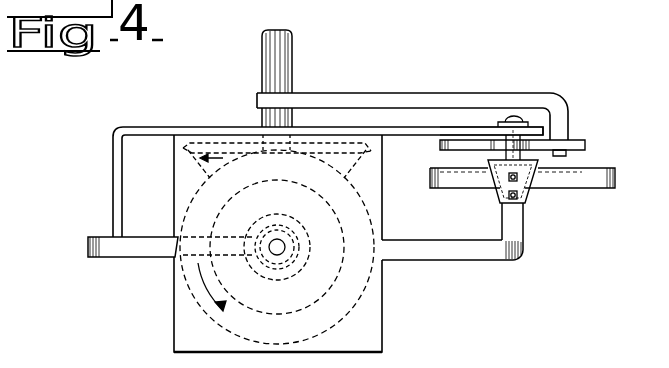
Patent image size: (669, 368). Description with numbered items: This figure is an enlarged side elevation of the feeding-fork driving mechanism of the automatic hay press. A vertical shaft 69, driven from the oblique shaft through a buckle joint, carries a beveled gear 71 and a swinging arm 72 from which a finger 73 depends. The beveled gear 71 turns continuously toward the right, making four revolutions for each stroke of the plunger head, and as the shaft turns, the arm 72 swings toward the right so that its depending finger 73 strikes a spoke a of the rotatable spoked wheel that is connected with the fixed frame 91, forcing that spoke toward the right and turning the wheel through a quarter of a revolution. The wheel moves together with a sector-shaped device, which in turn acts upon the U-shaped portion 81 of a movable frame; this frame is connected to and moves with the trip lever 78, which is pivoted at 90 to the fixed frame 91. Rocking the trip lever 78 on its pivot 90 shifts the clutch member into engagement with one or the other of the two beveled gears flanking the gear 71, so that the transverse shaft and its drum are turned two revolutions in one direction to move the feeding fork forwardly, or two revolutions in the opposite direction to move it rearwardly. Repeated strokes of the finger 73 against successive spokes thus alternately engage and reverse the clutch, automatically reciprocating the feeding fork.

The vertical shaft 69 is at (293, 55).
The swinging arm 72 is at (428, 93).
The fixed frame 91 is at (457, 135).
The depending finger 73 is at (562, 123).
The spoke a is at (586, 147).
The U-shaped portion 81 is at (595, 183).
The trip lever 78 is at (427, 253).
The beveled gear 71 is at (385, 163).
The pivot 90 is at (113, 236).